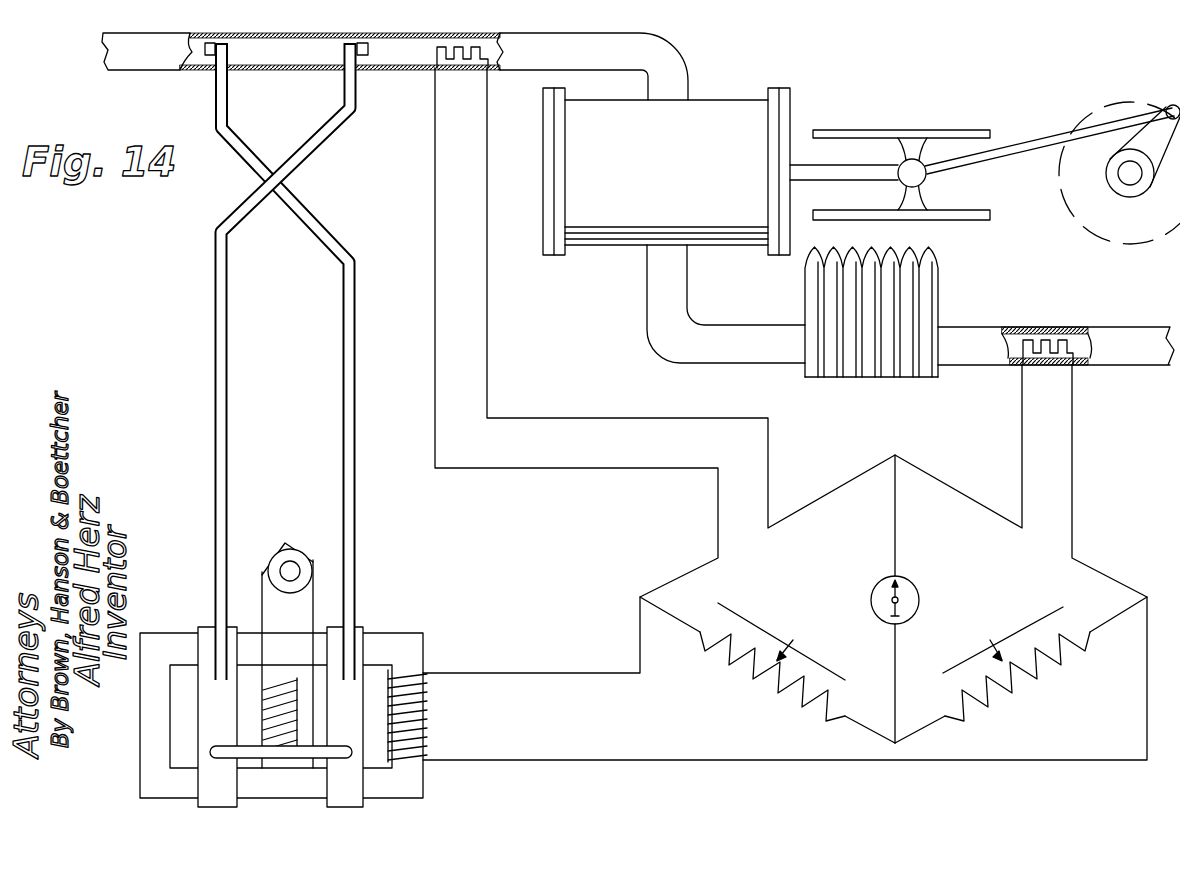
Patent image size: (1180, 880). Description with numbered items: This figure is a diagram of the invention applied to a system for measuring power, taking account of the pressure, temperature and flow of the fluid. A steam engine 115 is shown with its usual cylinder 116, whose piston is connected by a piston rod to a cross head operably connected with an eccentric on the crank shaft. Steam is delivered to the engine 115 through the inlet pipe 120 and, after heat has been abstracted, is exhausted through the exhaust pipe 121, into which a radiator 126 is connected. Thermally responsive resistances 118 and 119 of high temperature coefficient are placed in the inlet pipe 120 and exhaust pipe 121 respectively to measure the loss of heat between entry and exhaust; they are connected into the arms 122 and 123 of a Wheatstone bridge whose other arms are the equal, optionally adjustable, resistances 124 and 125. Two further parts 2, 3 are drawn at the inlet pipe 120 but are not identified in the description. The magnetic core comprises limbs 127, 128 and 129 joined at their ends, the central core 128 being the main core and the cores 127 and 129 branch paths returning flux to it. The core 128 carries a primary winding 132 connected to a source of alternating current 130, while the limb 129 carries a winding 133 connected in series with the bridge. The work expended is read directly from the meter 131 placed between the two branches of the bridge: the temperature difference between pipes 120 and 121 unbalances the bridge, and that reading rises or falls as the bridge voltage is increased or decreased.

The hook tube 2 is at (208, 58).
The hook tube 3 is at (350, 52).
The steam engine 115 is at (810, 118).
The cylinder 116 is at (702, 125).
The thermally responsive resistance 118 is at (457, 53).
The thermally responsive resistance 119 is at (1058, 345).
The inlet pipe 120 is at (557, 45).
The exhaust pipe 121 is at (947, 340).
The arm of Wheatstone bridge 122 is at (683, 578).
The arm of Wheatstone bridge 123 is at (1143, 548).
The resistance 124 is at (755, 660).
The resistance 125 is at (1030, 653).
The radiator 126 is at (833, 277).
The limb of magnetic core 127 is at (150, 700).
The central core 128 is at (275, 697).
The limb of magnetic core 129 is at (410, 670).
The source of alternating current 130 is at (287, 567).
The meter 131 is at (960, 560).
The primary winding 132 is at (305, 710).
The winding 133 is at (427, 735).